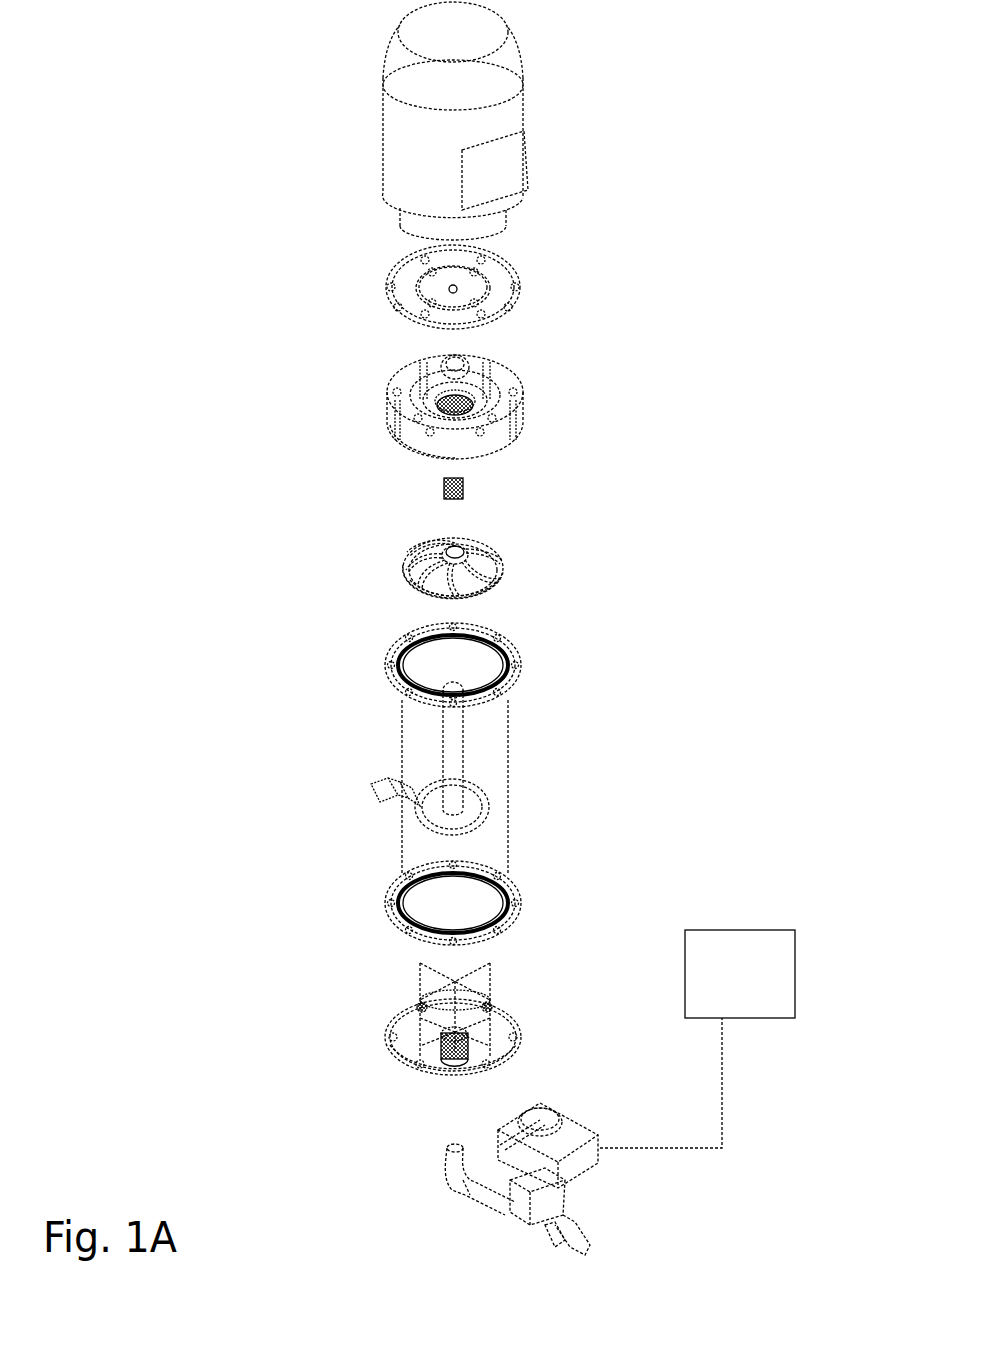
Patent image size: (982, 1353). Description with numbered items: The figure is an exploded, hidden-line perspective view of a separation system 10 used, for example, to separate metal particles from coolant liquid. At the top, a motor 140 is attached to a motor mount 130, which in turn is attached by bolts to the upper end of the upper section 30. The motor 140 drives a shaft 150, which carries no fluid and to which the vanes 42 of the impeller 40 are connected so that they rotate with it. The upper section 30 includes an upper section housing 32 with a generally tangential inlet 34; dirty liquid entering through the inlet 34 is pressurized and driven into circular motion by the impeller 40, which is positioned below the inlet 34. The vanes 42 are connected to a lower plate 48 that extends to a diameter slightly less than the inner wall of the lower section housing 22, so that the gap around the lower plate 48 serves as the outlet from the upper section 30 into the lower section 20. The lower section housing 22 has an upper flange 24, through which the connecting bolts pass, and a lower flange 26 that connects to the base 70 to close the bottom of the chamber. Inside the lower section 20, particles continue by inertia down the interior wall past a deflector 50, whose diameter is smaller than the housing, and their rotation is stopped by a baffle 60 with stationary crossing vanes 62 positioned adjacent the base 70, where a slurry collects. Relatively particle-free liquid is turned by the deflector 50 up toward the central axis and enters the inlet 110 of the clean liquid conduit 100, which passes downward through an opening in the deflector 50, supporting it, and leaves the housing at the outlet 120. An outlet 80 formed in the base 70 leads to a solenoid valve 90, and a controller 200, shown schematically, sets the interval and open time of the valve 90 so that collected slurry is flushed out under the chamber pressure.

The separation system 10 is at (708, 93).
The motor 140 is at (527, 80).
The motor mount 130 is at (528, 268).
The upper section 30 is at (443, 412).
The inlet 34 is at (443, 358).
The shaft 150 is at (447, 400).
The upper section housing 32 is at (390, 433).
The impeller 40 is at (449, 540).
The vanes 42 is at (480, 538).
The lower plate 48 is at (407, 580).
The lower section 20 is at (424, 781).
The upper flange 24 is at (382, 660).
The lower flange 26 is at (527, 895).
The lower section housing 22 is at (400, 848).
The clean liquid conduit 100 is at (538, 716).
The inlet of clean liquid conduit 110 is at (453, 688).
The deflector 50 is at (483, 802).
The outlet 120 is at (372, 787).
The baffle 60 is at (458, 1041).
The crossing vanes 62 is at (487, 1017).
The base 70 is at (397, 1017).
The outlet 80 is at (452, 1060).
The solenoid valve 90 is at (620, 1170).
The controller 200 is at (759, 980).